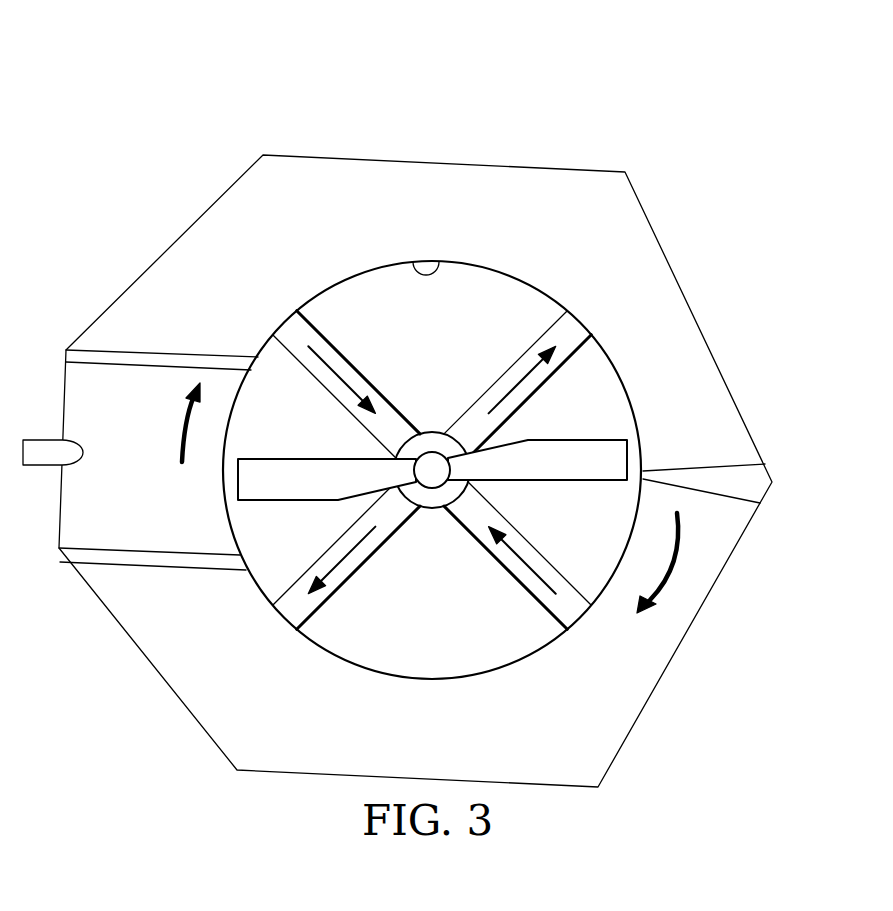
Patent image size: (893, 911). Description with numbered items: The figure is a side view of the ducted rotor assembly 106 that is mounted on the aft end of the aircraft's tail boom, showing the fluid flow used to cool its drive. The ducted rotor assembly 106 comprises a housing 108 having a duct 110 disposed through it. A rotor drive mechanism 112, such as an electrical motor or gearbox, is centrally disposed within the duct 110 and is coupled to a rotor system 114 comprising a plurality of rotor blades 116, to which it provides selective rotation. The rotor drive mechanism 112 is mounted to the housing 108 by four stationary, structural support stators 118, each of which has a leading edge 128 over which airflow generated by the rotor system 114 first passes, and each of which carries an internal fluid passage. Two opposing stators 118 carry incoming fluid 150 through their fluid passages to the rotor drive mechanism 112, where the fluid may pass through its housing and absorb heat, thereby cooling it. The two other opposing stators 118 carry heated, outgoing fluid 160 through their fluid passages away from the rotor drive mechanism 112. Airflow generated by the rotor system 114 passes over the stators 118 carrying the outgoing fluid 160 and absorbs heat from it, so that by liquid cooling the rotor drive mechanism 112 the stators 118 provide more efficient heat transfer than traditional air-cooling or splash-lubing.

The ducted rotor assembly 106 is at (166, 63).
The housing 108 is at (443, 160).
The duct 110 is at (439, 262).
The rotor drive mechanism 112 is at (433, 432).
The rotor system 114 is at (432, 488).
The rotor blades 116 is at (238, 480).
The stator 118 is at (310, 377).
The leading edge 128 is at (287, 328).
The incoming fluid 150 is at (348, 380).
The outgoing fluid 160 is at (510, 374).